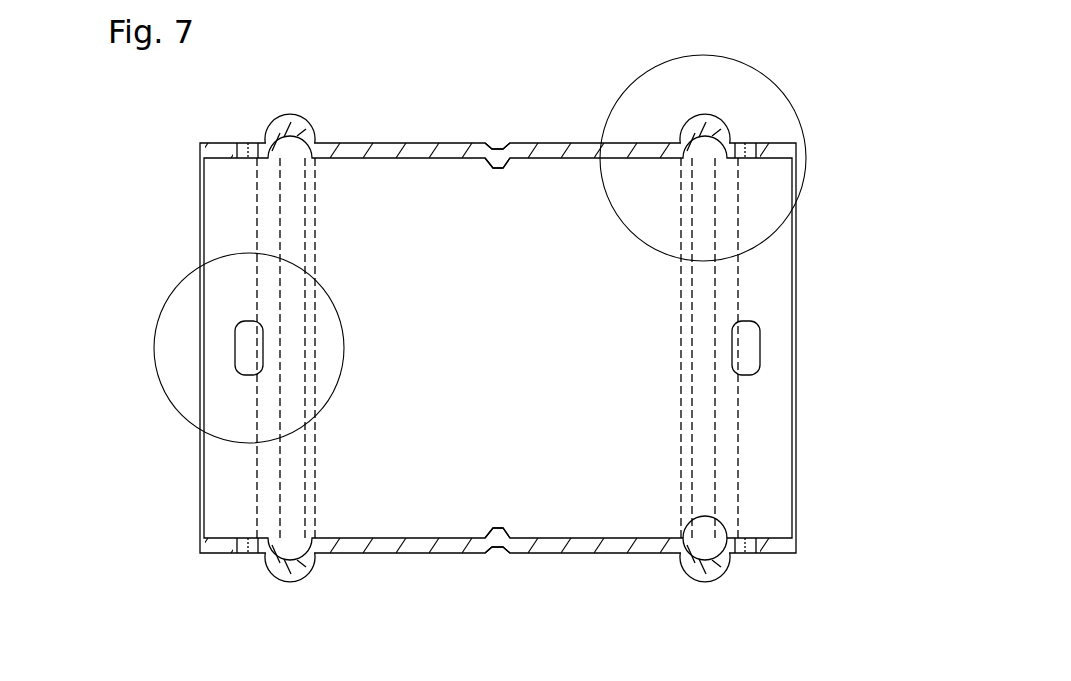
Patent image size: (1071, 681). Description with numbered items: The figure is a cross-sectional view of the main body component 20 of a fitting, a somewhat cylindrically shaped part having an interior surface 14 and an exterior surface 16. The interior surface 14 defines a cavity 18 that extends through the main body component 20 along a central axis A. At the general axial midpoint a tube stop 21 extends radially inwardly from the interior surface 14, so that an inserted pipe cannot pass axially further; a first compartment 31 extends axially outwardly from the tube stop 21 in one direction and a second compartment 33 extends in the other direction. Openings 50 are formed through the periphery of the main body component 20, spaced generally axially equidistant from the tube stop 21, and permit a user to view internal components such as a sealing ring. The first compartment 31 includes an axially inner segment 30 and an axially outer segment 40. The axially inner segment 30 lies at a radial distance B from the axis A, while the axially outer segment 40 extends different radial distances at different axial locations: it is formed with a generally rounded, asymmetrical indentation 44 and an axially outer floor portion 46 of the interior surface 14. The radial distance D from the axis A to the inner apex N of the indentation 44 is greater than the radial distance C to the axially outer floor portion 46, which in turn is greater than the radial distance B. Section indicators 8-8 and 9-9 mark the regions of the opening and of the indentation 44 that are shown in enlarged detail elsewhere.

The cavity 18 is at (215, 218).
The interior surface 14 is at (432, 157).
The second compartment 33 is at (432, 125).
The first compartment 31 is at (552, 130).
The tube stop 21 is at (493, 170).
The axially outer segment 40 is at (782, 258).
The axially inner segment 30 is at (623, 483).
The exterior surface 16 is at (428, 553).
The main body component 20 is at (402, 539).
The indentation 44 is at (695, 570).
The inner apex N is at (702, 556).
The axially outer floor portion 46 is at (773, 538).
The opening 50 is at (245, 562).
The section line 8-8 is at (160, 316).
The section line 9-9 is at (800, 123).
The central axis A is at (942, 349).
The radial distance B is at (575, 349).
The radial distance C is at (835, 349).
The radial distance D is at (730, 553).